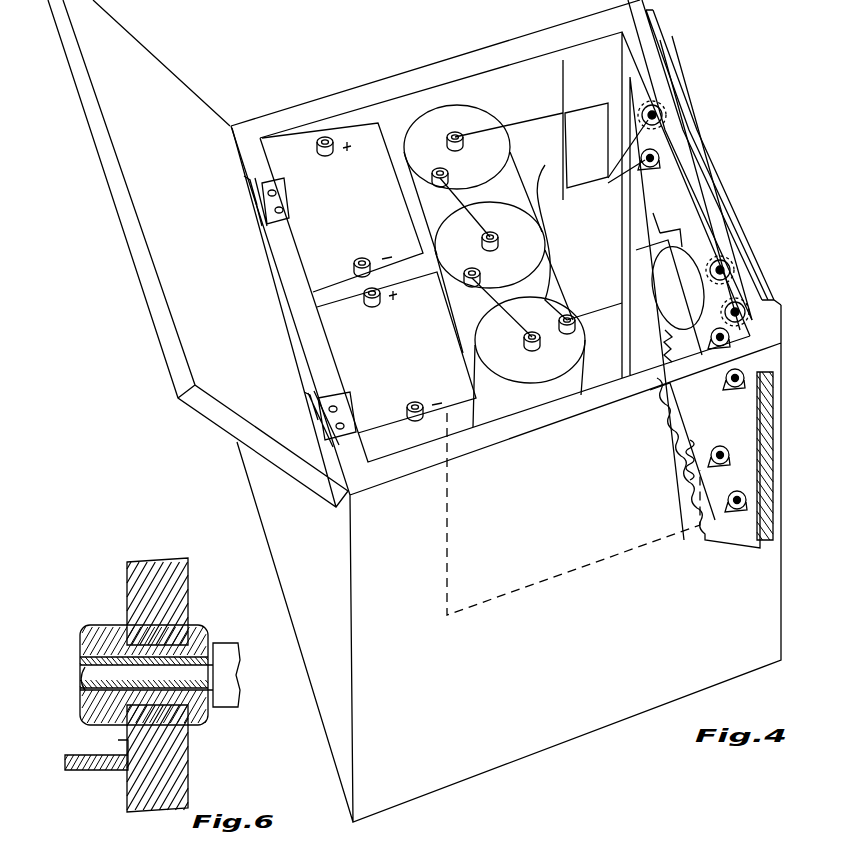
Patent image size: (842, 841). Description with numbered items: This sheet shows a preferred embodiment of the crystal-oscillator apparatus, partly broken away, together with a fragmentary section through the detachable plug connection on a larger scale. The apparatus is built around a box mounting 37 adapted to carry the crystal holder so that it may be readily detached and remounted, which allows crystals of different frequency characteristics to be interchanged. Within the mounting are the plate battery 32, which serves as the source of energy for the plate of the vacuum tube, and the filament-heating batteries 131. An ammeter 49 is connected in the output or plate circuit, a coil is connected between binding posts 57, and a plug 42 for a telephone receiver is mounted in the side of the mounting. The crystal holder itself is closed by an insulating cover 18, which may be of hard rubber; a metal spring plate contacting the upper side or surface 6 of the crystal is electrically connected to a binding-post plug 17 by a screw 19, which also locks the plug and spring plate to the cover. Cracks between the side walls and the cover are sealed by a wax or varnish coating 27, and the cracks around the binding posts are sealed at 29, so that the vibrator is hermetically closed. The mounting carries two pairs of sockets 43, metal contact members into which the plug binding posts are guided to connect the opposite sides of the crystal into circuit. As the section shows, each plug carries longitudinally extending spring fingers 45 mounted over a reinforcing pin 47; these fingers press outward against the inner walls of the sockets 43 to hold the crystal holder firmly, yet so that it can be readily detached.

In FIG. 4, the side or surface of the crystal element 6 is at (665, 840).
In FIG. 4, the binding-post plug 17 is at (535, 840).
In FIG. 6, the binding-post plug 17 is at (55, 679).
In FIG. 4, the insulating cover 18 is at (690, 840).
In FIG. 4, the screw 19 is at (627, 840).
In FIG. 4, the coating 27 is at (432, 770).
In FIG. 4, the seal 29 is at (578, 840).
In FIG. 4, the plate battery 32 is at (369, 278).
In FIG. 6, the box mounting 37 is at (170, 560).
In FIG. 4, the plug for a telephone receiver 42 is at (752, 500).
In FIG. 4, the sockets 43 is at (749, 310).
In FIG. 6, the sockets 43 is at (190, 628).
In FIG. 4, the spring fingers 45 is at (558, 840).
In FIG. 6, the spring fingers 45 is at (100, 628).
In FIG. 6, the reinforcing pin 47 is at (150, 690).
In FIG. 4, the ammeter 49 is at (690, 260).
In FIG. 4, the binding posts 57 is at (662, 150).
In FIG. 4, the filament-heating batteries 131 is at (493, 152).